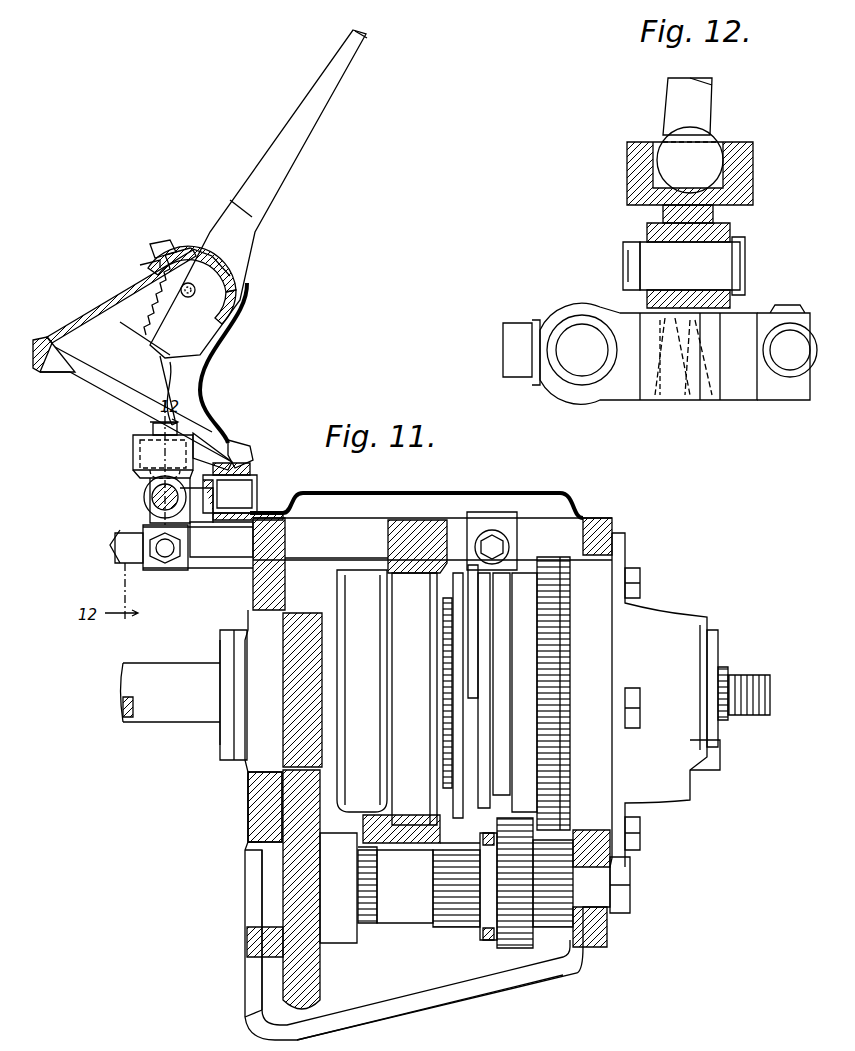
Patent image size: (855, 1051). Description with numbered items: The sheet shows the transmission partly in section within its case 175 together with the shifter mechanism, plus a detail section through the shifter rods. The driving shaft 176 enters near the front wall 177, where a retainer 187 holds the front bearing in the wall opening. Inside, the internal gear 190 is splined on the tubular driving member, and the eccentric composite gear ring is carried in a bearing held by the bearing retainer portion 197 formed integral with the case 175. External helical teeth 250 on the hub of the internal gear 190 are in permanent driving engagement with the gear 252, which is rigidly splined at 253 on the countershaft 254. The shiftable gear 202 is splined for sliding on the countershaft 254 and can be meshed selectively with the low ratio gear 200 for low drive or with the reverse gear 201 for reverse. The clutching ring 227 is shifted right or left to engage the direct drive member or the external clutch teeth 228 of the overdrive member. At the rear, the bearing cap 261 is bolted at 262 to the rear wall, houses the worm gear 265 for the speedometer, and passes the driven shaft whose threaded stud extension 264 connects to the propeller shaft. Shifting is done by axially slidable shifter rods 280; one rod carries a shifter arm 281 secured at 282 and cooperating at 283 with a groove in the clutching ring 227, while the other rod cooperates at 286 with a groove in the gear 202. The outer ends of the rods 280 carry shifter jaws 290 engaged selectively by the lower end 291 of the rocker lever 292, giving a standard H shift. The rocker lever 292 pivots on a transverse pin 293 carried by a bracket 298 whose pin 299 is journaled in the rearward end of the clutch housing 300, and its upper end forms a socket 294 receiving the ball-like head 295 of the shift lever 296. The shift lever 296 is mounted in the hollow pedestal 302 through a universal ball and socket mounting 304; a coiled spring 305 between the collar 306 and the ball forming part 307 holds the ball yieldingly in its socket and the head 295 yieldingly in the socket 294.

In FIG. 11, the case 175 is at (435, 1000).
In FIG. 11, the driving shaft 176 is at (132, 701).
In FIG. 11, the front wall 177 is at (256, 829).
In FIG. 11, the retainer 187 is at (237, 622).
In FIG. 11, the internal gear 190 is at (348, 578).
In FIG. 11, the bearing retainer portion 197 is at (393, 545).
In FIG. 11, the low ratio gear 200 is at (562, 637).
In FIG. 11, the reverse gear 201 is at (470, 820).
In FIG. 11, the shiftable gear 202 is at (510, 950).
In FIG. 11, the clutching ring 227 is at (490, 592).
In FIG. 11, the external clutch teeth 228 is at (448, 645).
In FIG. 11, the external helical teeth 250 is at (320, 606).
In FIG. 11, the gear 252 is at (312, 967).
In FIG. 11, the splines 253 is at (370, 889).
In FIG. 11, the countershaft 254 is at (411, 913).
In FIG. 11, the bearing cap 261 is at (619, 551).
In FIG. 11, the bolts 262 is at (641, 584).
In FIG. 11, the threaded stud extension 264 is at (748, 693).
In FIG. 11, the worm gear 265 is at (718, 651).
In FIG. 11, the shifter rods 280 is at (331, 537).
In FIG. 12, the shifter rods 280 is at (581, 330).
In FIG. 11, the shifter arm 281 is at (480, 512).
In FIG. 11, the securing point 282 is at (494, 540).
In FIG. 11, the shifting engagement 283 is at (457, 612).
In FIG. 11, the shifting engagement 286 is at (472, 902).
In FIG. 11, the shifter jaws 290 is at (152, 572).
In FIG. 12, the shifter jaws 290 is at (555, 387).
In FIG. 11, the lower end of rocker lever 291 is at (143, 523).
In FIG. 12, the lower end of rocker lever 291 is at (690, 398).
In FIG. 11, the rocker lever 292 is at (148, 486).
In FIG. 12, the rocker lever 292 is at (650, 226).
In FIG. 11, the transverse pin 293 is at (150, 498).
In FIG. 12, the transverse pin 293 is at (720, 261).
In FIG. 11, the socket 294 is at (143, 447).
In FIG. 12, the socket 294 is at (644, 168).
In FIG. 11, the ball-like head 295 is at (163, 452).
In FIG. 12, the ball-like head 295 is at (707, 155).
In FIG. 11, the shift lever 296 is at (302, 120).
In FIG. 12, the shift lever 296 is at (668, 100).
In FIG. 11, the bracket 298 is at (199, 515).
In FIG. 12, the bracket 298 is at (730, 229).
In FIG. 11, the pin 299 is at (243, 497).
In FIG. 11, the clutch housing 300 is at (230, 443).
In FIG. 11, the hollow pedestal 302 is at (203, 383).
In FIG. 11, the universal ball and socket mounting 304 is at (237, 277).
In FIG. 11, the coiled spring 305 is at (160, 291).
In FIG. 11, the collar 306 is at (130, 330).
In FIG. 11, the ball forming part 307 is at (237, 292).